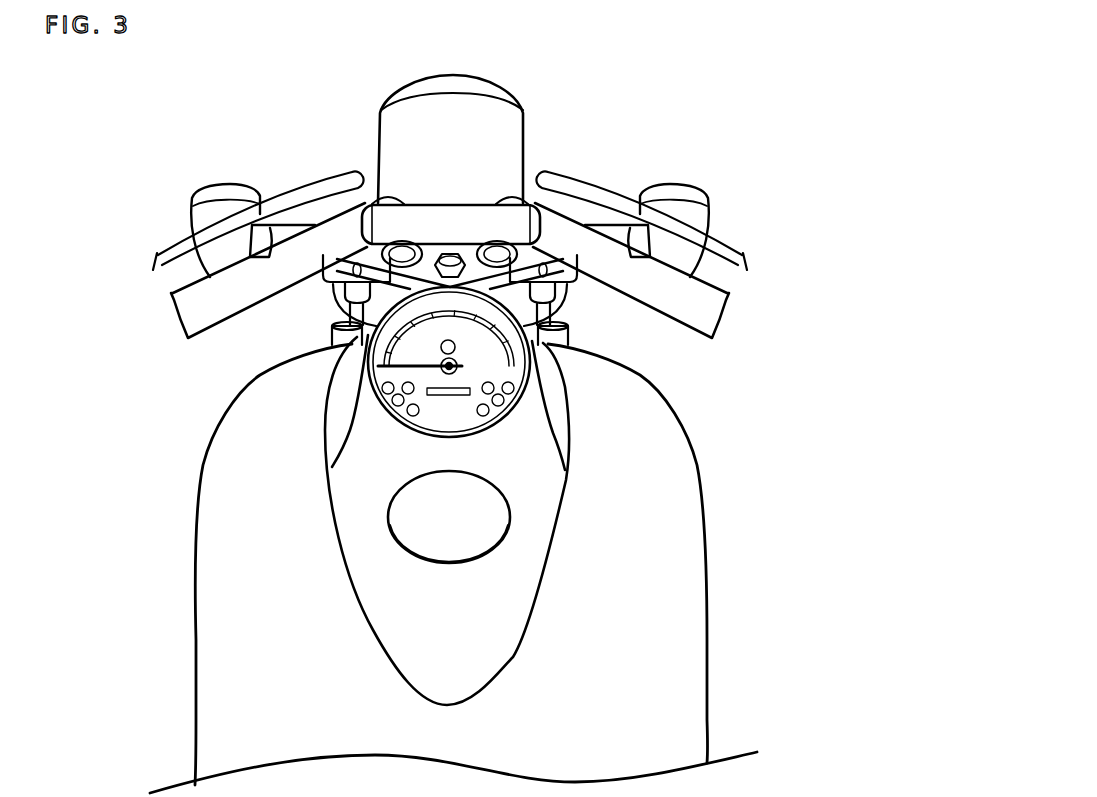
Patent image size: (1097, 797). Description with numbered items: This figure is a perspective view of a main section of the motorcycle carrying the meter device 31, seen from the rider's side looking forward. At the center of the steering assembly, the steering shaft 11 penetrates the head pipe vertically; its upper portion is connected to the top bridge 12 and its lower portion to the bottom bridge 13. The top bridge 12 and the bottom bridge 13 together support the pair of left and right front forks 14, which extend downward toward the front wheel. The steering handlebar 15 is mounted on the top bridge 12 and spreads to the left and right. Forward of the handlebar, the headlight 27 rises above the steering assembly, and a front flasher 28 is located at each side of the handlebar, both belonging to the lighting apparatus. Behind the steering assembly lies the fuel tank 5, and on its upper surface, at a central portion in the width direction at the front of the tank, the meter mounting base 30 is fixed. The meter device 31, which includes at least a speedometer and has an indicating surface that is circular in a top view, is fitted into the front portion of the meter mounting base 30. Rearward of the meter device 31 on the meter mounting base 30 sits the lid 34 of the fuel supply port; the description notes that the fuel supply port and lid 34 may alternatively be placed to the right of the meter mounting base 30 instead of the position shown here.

The headlight 27 is at (502, 145).
The steering shaft 11 is at (448, 255).
The top bridge 12 is at (568, 206).
The front flasher 28 is at (693, 190).
The steering handlebar 15 is at (695, 320).
The bottom bridge 13 is at (573, 303).
The front forks 14 is at (573, 343).
The meter device 31 is at (465, 420).
The meter mounting base 30 is at (545, 527).
The lid 34 is at (473, 538).
The fuel tank 5 is at (690, 618).